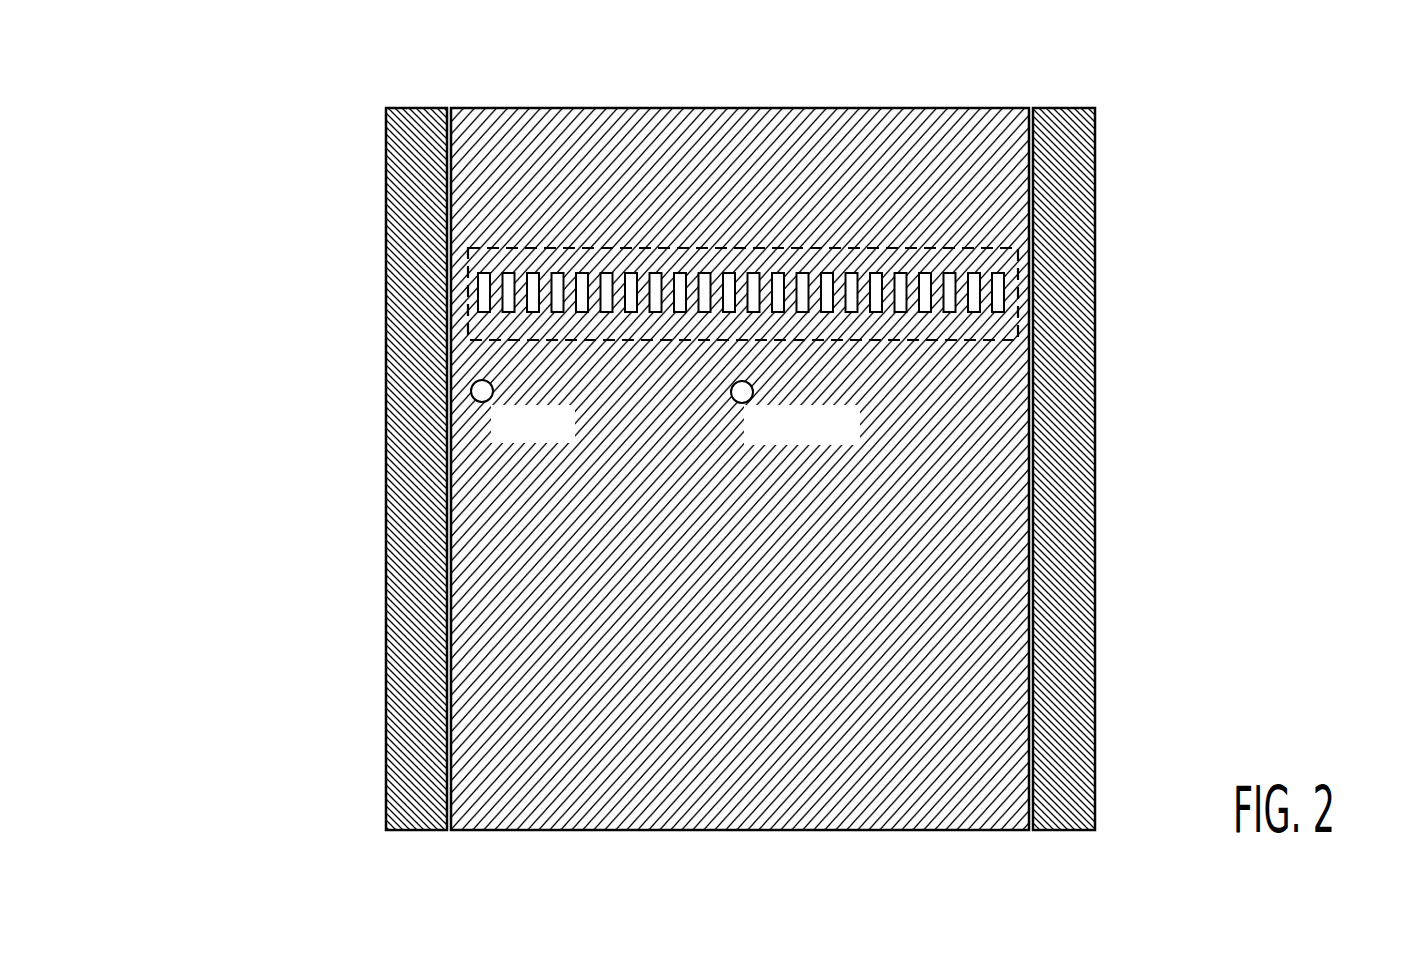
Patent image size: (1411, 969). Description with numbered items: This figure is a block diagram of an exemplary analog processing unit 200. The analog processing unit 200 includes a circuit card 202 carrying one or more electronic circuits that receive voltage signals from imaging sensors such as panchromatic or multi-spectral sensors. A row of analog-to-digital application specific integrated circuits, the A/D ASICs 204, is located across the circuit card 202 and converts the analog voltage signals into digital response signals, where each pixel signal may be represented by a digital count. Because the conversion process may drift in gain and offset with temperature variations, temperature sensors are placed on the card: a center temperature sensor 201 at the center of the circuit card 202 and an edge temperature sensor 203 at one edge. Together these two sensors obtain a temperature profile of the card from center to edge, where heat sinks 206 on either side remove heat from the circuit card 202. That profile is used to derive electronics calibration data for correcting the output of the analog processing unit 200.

The analog processing unit 200 is at (257, 101).
The center temperature sensor 201 is at (758, 397).
The circuit card 202 is at (1003, 209).
The edge temperature sensor 203 is at (468, 394).
The analog-to-digital application specific integrated circuits (ASICs) 204 is at (1003, 262).
The heat sinks 206 is at (1045, 110).